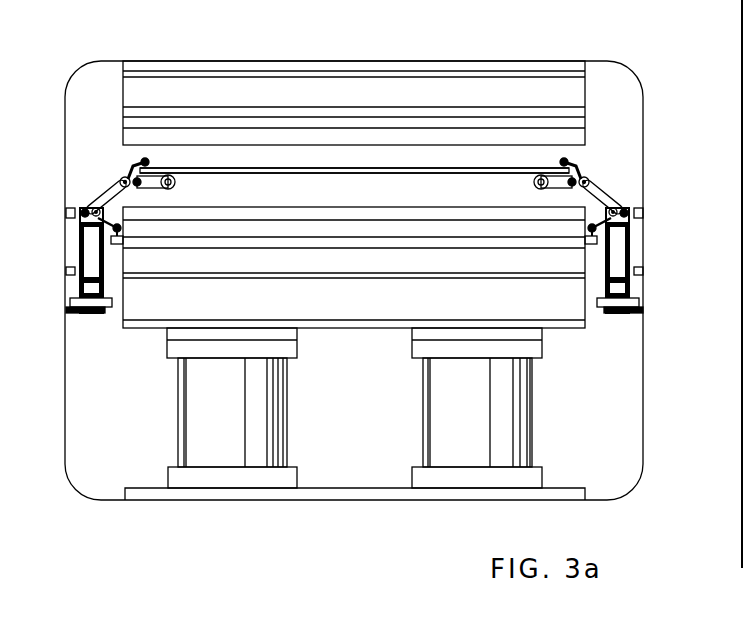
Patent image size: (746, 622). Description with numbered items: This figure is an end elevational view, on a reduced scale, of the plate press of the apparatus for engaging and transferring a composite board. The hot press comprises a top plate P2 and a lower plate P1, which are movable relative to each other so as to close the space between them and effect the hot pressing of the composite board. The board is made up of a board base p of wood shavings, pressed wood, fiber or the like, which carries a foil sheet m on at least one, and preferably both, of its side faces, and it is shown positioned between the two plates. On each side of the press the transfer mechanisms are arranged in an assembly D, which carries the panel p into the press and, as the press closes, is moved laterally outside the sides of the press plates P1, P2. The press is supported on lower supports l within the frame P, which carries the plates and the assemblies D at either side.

The assembly D is at (86, 177).
The press frame P is at (380, 280).
The top plate P2 is at (354, 137).
The lower plate P1 is at (355, 215).
The board base p is at (451, 173).
The foil sheet m is at (502, 173).
The columns l is at (448, 434).